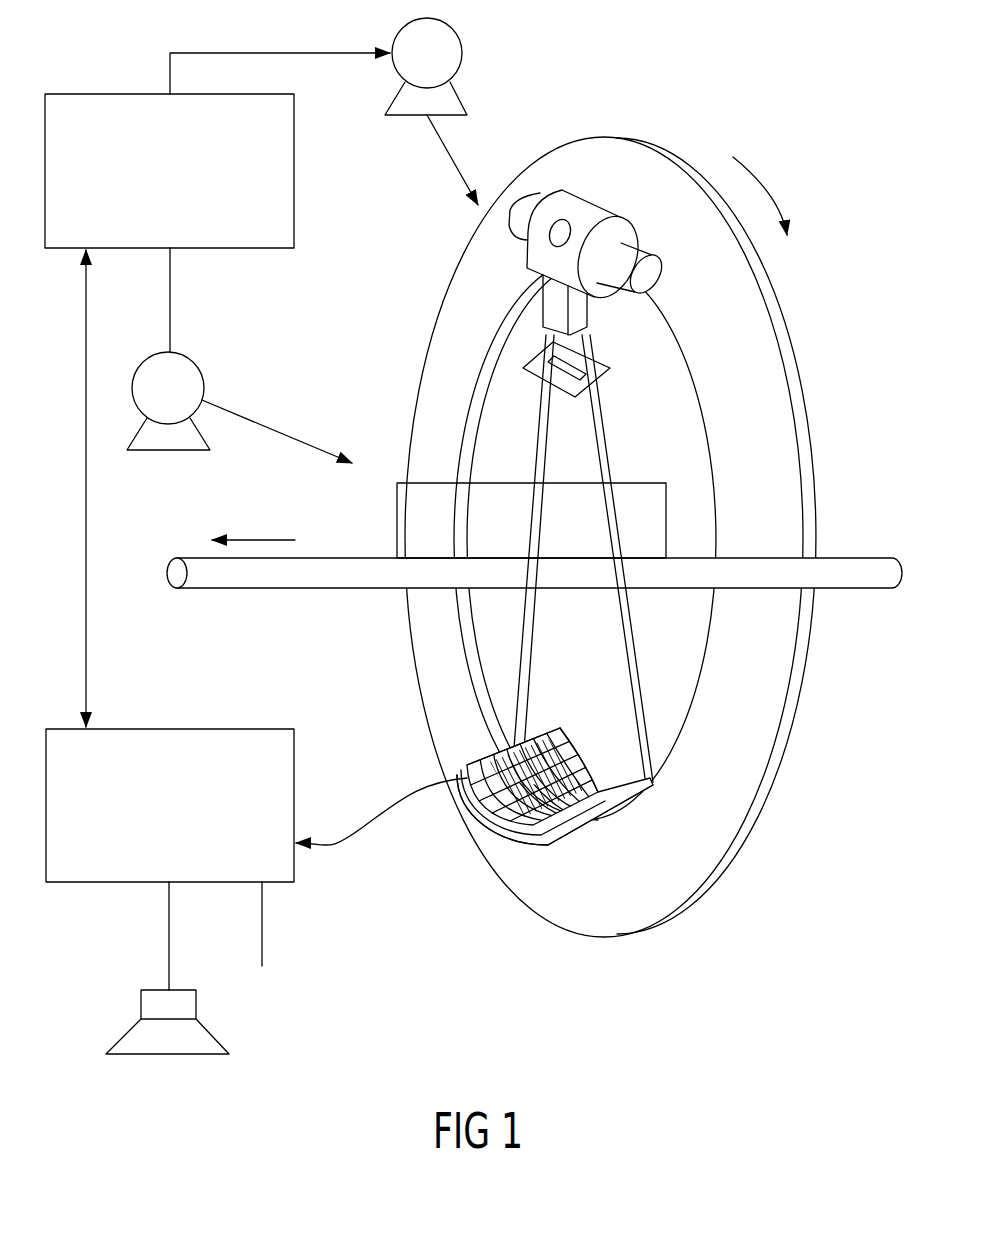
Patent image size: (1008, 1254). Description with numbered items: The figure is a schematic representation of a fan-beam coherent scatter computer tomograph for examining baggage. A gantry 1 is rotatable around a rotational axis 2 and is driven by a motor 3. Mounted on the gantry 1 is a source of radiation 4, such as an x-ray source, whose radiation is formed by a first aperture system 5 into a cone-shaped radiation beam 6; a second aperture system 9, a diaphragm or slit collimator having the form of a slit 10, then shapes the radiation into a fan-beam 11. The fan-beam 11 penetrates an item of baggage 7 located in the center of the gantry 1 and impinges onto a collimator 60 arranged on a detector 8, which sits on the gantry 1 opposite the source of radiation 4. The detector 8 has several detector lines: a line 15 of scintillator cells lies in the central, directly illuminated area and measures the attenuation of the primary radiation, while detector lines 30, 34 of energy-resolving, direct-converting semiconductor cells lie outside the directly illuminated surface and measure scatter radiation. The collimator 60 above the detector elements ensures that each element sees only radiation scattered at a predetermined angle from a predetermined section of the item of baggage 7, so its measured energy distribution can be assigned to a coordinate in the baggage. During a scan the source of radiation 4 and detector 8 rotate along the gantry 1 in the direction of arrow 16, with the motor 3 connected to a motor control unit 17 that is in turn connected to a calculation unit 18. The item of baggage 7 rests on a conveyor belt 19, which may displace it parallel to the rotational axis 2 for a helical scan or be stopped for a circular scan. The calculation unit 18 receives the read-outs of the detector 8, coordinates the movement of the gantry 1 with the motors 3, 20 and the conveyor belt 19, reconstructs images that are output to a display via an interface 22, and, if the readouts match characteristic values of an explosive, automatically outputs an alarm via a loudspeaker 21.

The gantry 1 is at (778, 708).
The rotational axis 2 is at (262, 540).
The motor 3 is at (462, 48).
The source of radiation 4 is at (597, 206).
The first aperture system 5 is at (555, 305).
The cone-shaped radiation beam 6 is at (587, 336).
The item of baggage 7 is at (395, 519).
The detector 8 is at (507, 828).
The second aperture system 9 is at (537, 386).
The slit 10 is at (582, 378).
The fan-beam 11 is at (598, 455).
The line of scintillator cells 15 is at (520, 738).
The arrow 16 is at (760, 185).
The motor control unit 17 is at (103, 94).
The calculation unit 18 is at (203, 729).
The conveyor belt 19 is at (873, 565).
The motor 20 is at (204, 385).
The loudspeaker 21 is at (165, 1058).
The interface 22 is at (262, 925).
The detector line 30 is at (470, 750).
The detector line 34 is at (560, 738).
The collimator 60 is at (547, 823).